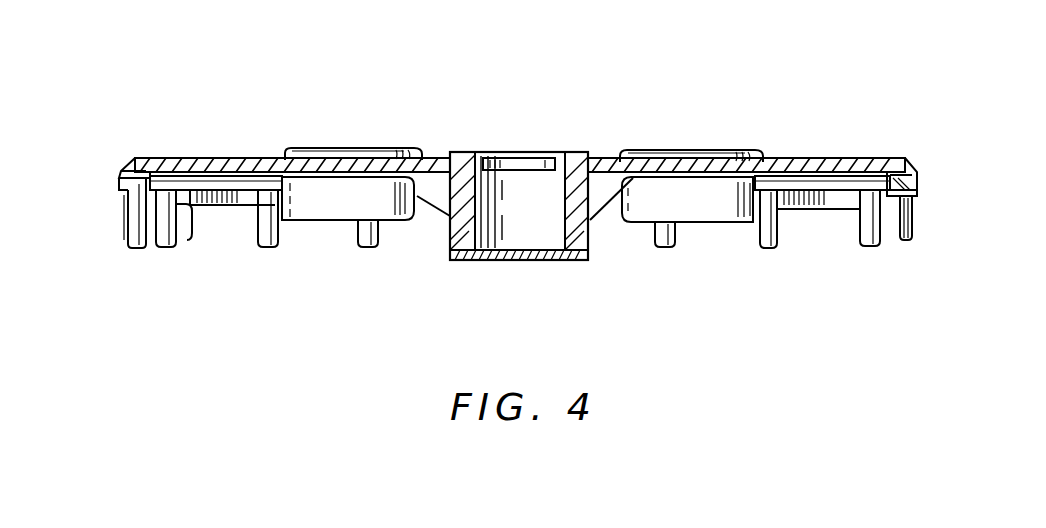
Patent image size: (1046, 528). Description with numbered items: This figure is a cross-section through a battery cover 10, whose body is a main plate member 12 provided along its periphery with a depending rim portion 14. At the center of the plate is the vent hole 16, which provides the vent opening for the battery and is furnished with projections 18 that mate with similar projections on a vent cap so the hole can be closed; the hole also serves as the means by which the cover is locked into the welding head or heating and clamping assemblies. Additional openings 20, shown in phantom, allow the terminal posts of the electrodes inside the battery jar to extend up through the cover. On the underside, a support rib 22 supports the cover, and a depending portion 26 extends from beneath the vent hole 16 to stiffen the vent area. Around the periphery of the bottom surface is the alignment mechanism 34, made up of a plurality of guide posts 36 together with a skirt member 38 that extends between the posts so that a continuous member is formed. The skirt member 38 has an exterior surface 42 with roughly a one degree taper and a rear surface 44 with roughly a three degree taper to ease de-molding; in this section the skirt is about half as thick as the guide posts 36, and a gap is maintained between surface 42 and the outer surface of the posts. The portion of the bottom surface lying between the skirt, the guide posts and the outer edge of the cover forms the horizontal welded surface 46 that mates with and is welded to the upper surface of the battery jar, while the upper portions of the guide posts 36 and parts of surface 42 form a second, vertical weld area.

The cover 10 is at (528, 112).
The main plate member 12 is at (795, 158).
The depending rim portion 14 is at (905, 158).
The vent hole 16 is at (566, 152).
The projections 18 is at (536, 172).
The openings 20 is at (364, 108).
The support rib 22 is at (428, 232).
The depending portion 26 is at (448, 200).
The alignment mechanism 34 is at (807, 232).
The guide posts 36 is at (760, 248).
The skirt member 38 is at (840, 200).
The exterior surface 42 is at (118, 202).
The rear surface 44 is at (188, 240).
The horizontal welded surface 46 is at (906, 207).